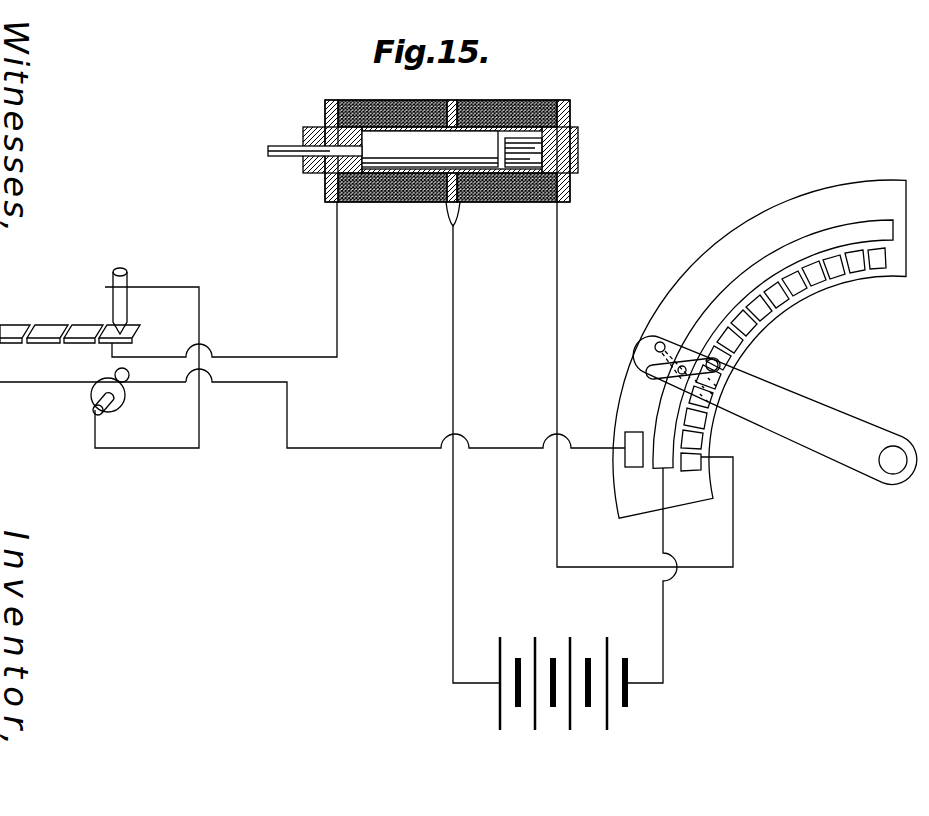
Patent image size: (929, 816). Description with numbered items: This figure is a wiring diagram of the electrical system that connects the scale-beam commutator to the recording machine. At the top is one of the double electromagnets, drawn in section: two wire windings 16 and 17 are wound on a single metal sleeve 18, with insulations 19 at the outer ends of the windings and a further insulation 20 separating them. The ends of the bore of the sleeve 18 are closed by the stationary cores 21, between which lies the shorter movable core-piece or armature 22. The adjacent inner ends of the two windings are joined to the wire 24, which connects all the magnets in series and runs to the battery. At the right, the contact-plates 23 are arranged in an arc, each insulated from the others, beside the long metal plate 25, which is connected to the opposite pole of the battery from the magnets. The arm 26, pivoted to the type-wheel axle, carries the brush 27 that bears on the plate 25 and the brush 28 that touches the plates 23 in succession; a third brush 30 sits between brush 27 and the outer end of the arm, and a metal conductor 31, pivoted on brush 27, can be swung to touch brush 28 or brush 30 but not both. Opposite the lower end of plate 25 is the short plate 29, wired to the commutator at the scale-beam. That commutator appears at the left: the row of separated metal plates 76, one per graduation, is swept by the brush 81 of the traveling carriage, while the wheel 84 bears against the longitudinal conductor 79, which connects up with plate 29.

The wire winding 16 is at (375, 103).
The wire winding 17 is at (505, 103).
The metal sleeve 18 is at (398, 163).
The insulation 19 is at (342, 100).
The insulation 20 is at (451, 103).
The core 21 is at (306, 170).
The movable core-piece or armature 22 is at (433, 149).
The contact-plate 23 is at (762, 322).
The wire 24 is at (455, 242).
The metal plate 25 is at (772, 262).
The arm 26 is at (817, 403).
The electrical brush 27 is at (668, 392).
The electrical brush 28 is at (719, 376).
The metal plate 29 is at (633, 468).
The brush 30 is at (663, 340).
The metal conductor 31 is at (652, 377).
The metal plate 76 is at (38, 347).
The conductor 79 is at (17, 384).
The brush 81 is at (128, 300).
The wheel 84 is at (124, 405).